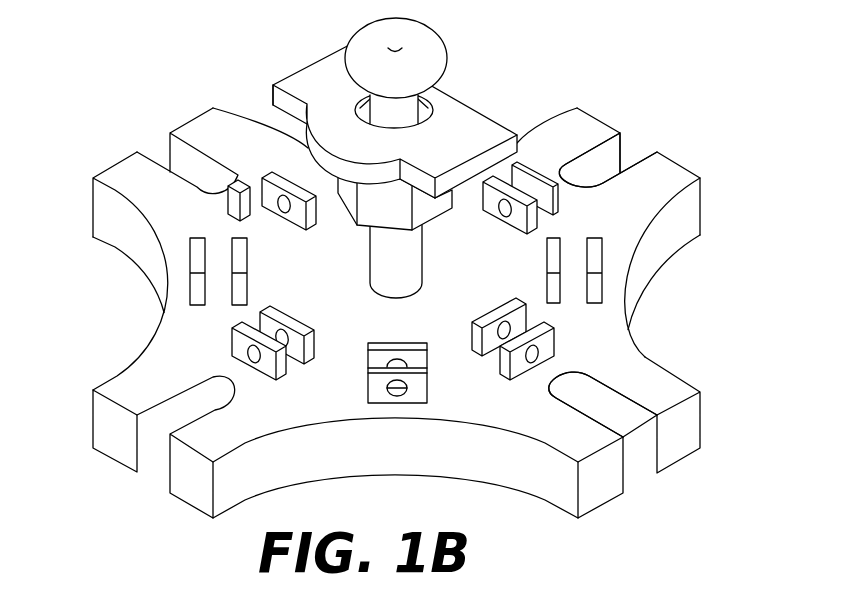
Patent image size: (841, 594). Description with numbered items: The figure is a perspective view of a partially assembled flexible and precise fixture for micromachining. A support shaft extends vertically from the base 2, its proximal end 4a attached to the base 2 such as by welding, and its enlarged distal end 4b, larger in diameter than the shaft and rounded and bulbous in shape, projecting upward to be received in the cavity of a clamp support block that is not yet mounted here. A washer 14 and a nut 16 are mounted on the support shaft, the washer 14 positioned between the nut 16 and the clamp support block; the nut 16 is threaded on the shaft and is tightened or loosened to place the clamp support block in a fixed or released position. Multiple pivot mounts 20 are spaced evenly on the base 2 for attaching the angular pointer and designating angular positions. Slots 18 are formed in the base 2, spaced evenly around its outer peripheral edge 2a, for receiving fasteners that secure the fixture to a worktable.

The base 2 is at (143, 367).
The outer peripheral edge 2a is at (683, 435).
The proximal end 4a is at (397, 297).
The enlarged distal end 4b is at (430, 38).
The washer 14 is at (467, 100).
The nut 16 is at (367, 210).
The slot 18 is at (598, 162).
The pivot mount 20 is at (262, 368).